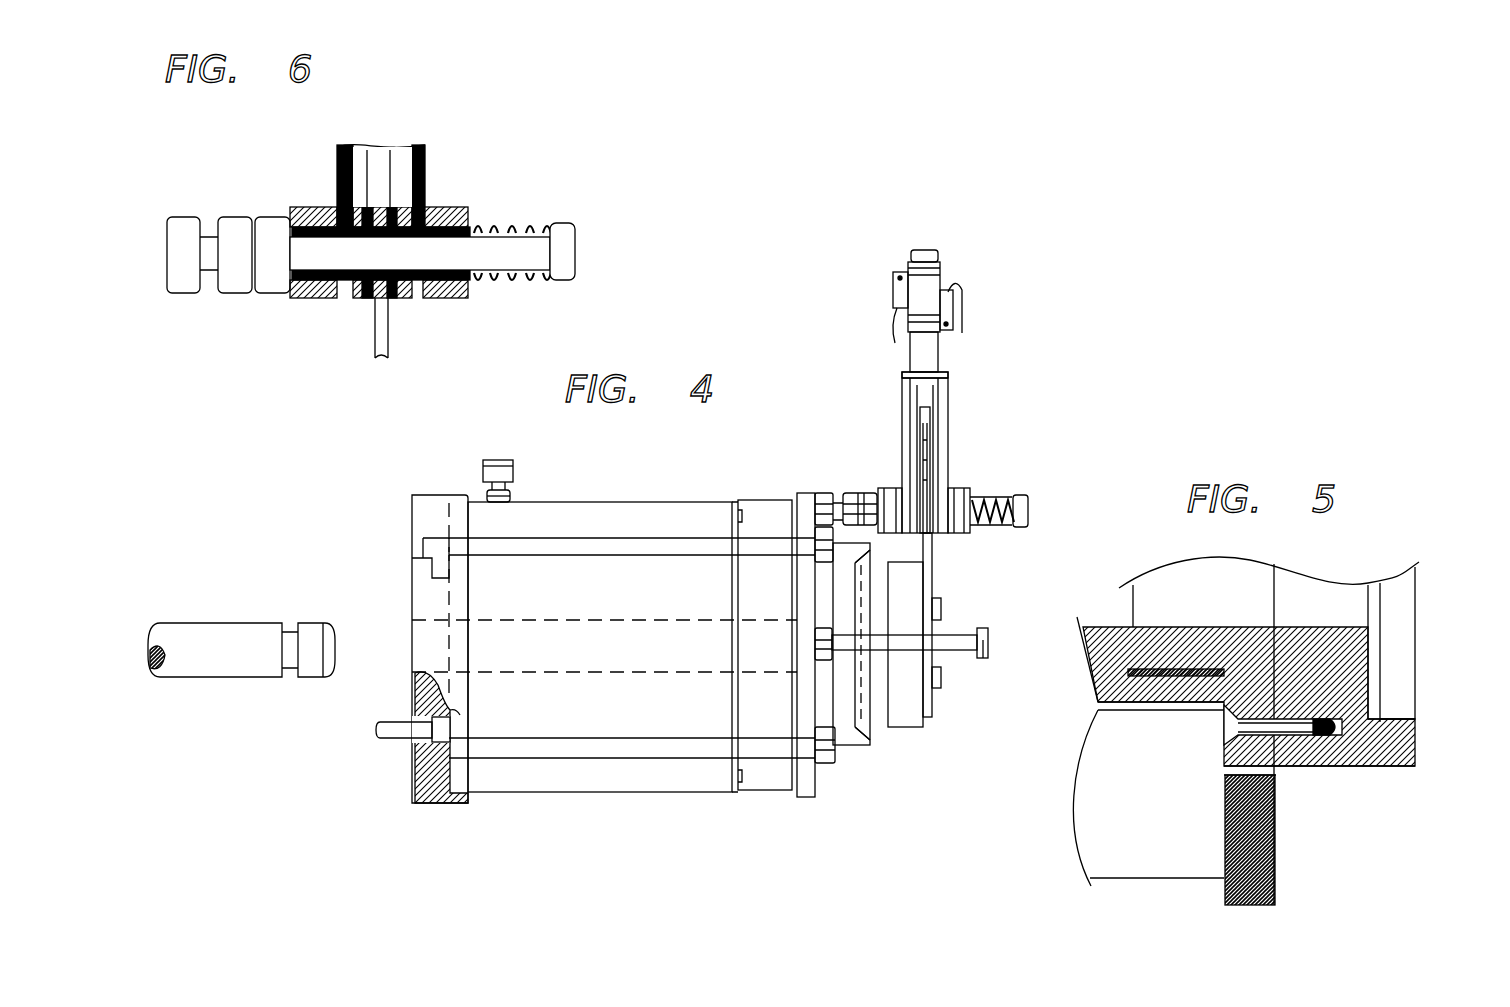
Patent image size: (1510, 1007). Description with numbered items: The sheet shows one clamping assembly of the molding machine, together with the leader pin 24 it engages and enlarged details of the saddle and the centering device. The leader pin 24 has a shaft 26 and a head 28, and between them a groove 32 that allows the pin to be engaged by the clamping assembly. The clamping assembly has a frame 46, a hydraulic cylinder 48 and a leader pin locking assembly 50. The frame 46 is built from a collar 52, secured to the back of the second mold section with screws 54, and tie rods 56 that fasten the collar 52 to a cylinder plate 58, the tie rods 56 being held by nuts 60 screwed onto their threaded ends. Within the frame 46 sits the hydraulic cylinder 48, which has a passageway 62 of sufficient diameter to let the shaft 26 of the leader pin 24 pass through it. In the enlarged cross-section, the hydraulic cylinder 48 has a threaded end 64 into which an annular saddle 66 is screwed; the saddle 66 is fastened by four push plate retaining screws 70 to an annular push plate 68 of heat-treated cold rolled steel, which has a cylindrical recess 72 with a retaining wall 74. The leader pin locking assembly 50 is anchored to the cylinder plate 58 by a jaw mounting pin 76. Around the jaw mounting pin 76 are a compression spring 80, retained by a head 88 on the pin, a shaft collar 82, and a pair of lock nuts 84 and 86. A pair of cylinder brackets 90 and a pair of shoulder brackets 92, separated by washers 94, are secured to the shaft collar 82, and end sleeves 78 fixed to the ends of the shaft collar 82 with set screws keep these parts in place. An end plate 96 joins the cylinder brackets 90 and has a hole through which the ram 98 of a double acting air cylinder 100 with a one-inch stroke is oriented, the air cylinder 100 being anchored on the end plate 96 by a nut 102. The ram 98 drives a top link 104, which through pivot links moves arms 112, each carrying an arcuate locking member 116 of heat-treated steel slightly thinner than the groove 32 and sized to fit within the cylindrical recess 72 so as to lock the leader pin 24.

In FIG. 4, the leader pin 24 is at (245, 599).
In FIG. 4, the shaft 26 is at (213, 633).
In FIG. 4, the head 28 is at (312, 628).
In FIG. 4, the groove 32 is at (292, 618).
In FIG. 4, the frame 46 is at (520, 528).
In FIG. 4, the hydraulic cylinder 48 is at (685, 508).
In FIG. 4, the leader pin locking assembly 50 is at (978, 660).
In FIG. 4, the collar 52 is at (435, 497).
In FIG. 4, the screws 54 is at (393, 738).
In FIG. 4, the tie rods 56 is at (582, 545).
In FIG. 4, the cylinder plate 58 is at (808, 493).
In FIG. 5, the cylinder plate 58 is at (1278, 858).
In FIG. 4, the nuts 60 is at (825, 565).
In FIG. 4, the passageway 62 is at (538, 637).
In FIG. 5, the threaded end 64 is at (1152, 675).
In FIG. 5, the saddle 66 is at (1255, 634).
In FIG. 4, the push plate 68 is at (842, 745).
In FIG. 5, the push plate 68 is at (1356, 750).
In FIG. 5, the push plate retaining screws 70 is at (1231, 726).
In FIG. 5, the cylindrical recess 72 is at (1394, 641).
In FIG. 4, the retaining wall 74 is at (862, 728).
In FIG. 5, the retaining wall 74 is at (1414, 728).
In FIG. 4, the jaw mounting pin 76 is at (840, 488).
In FIG. 6, the end sleeves 78 is at (442, 208).
In FIG. 6, the compression spring 80 is at (505, 225).
In FIG. 6, the shaft collar 82 is at (463, 207).
In FIG. 6, the lock nut 84 is at (238, 222).
In FIG. 6, the lock nut 86 is at (273, 224).
In FIG. 6, the head 88 is at (562, 268).
In FIG. 6, the cylinder brackets 90 is at (423, 158).
In FIG. 4, the cylinder brackets 90 is at (948, 432).
In FIG. 6, the shoulder brackets 92 is at (365, 300).
In FIG. 6, the washers 94 is at (353, 147).
In FIG. 4, the end plate 96 is at (943, 372).
In FIG. 4, the ram 98 is at (923, 402).
In FIG. 4, the air cylinder 100 is at (943, 243).
In FIG. 4, the nut 102 is at (907, 382).
In FIG. 4, the top link 104 is at (930, 457).
In FIG. 6, the arms 112 is at (378, 332).
In FIG. 4, the arms 112 is at (927, 632).
In FIG. 4, the arcuate locking members 116 is at (908, 587).